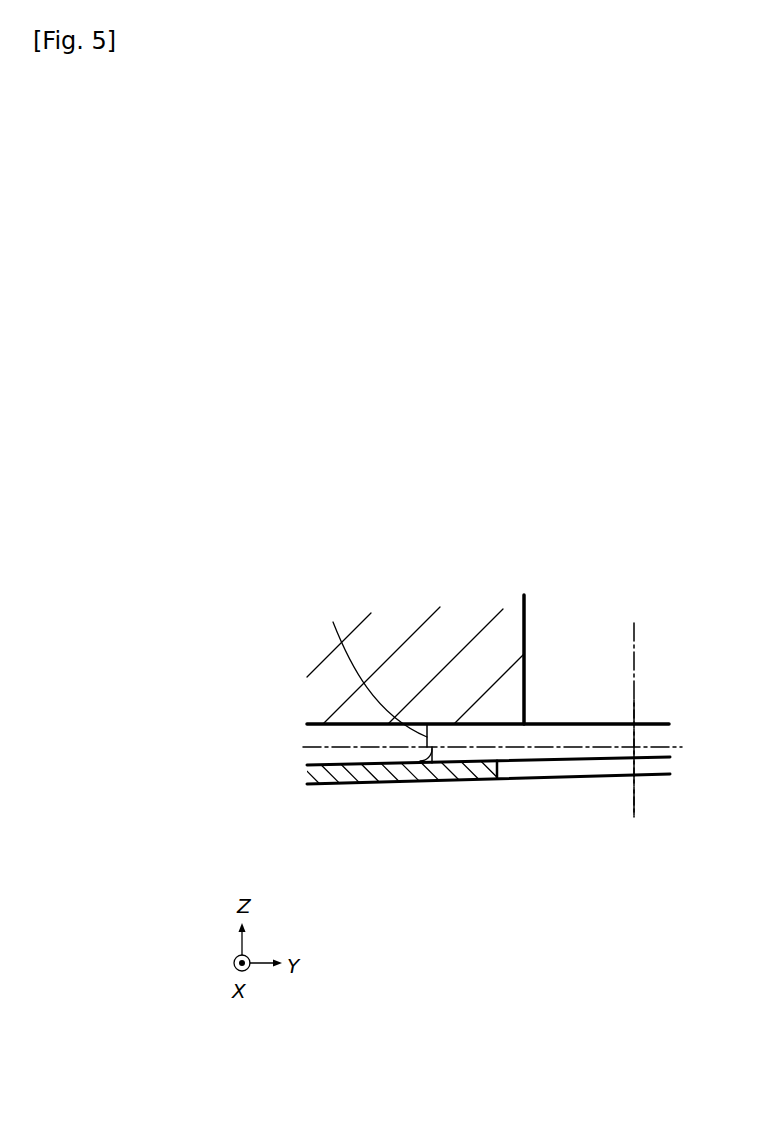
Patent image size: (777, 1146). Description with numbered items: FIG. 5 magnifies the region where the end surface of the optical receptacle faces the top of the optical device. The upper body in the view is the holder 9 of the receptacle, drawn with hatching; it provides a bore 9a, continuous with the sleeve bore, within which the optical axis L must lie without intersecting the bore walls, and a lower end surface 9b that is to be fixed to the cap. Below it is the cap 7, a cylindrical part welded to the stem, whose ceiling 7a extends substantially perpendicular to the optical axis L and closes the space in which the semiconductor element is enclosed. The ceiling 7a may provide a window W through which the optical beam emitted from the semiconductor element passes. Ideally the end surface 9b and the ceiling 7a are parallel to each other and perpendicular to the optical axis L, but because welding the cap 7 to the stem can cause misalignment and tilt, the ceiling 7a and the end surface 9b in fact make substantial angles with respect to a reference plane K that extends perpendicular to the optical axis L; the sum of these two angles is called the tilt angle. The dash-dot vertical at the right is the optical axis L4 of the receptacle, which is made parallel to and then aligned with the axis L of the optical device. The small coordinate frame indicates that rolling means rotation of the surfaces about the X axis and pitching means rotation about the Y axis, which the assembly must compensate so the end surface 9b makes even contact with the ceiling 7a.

The holder 9 is at (397, 638).
The bore 9a is at (525, 635).
The end surface 9b is at (322, 724).
The cap 7 is at (388, 776).
The ceiling 7a is at (310, 765).
The window W is at (499, 768).
The reference plane K is at (503, 752).
The optical axis L is at (632, 776).
The optical axis of the receptacle L4 is at (633, 704).